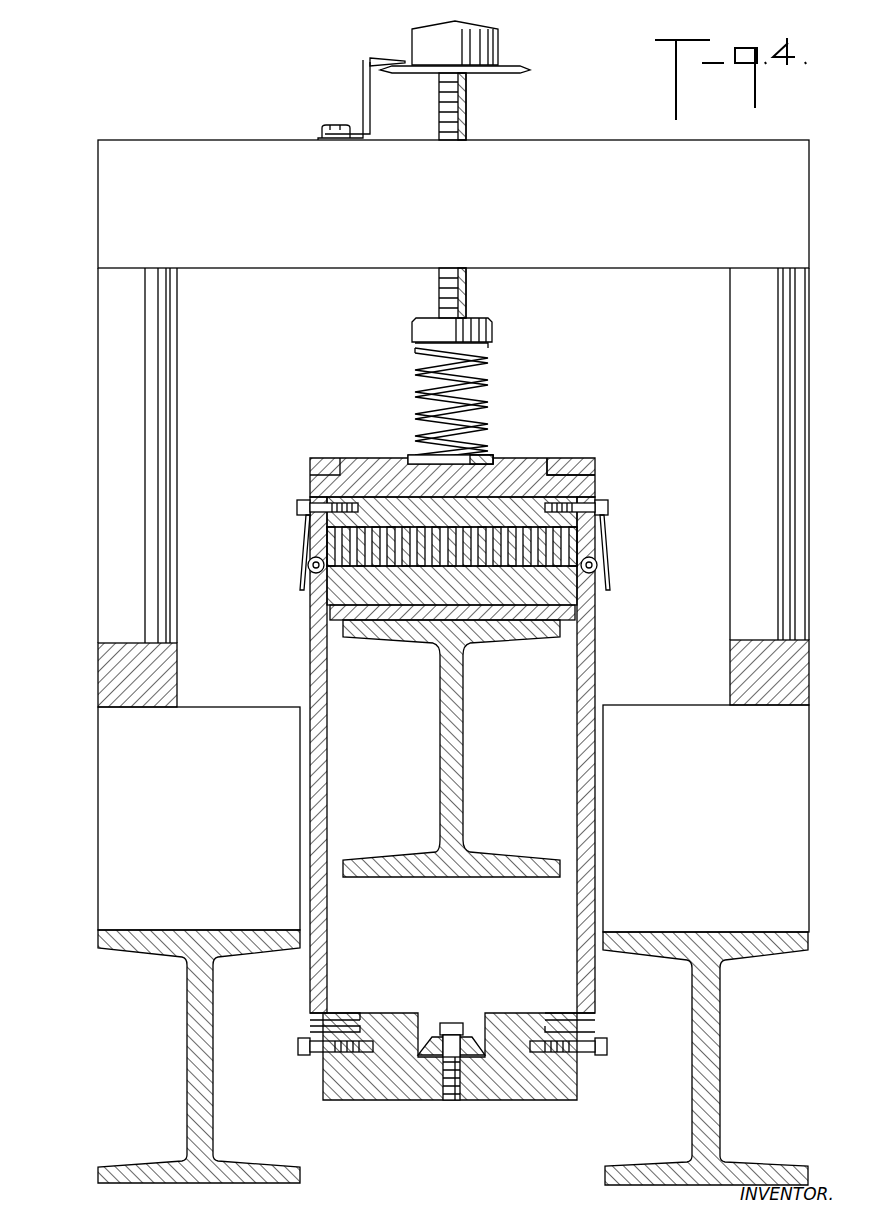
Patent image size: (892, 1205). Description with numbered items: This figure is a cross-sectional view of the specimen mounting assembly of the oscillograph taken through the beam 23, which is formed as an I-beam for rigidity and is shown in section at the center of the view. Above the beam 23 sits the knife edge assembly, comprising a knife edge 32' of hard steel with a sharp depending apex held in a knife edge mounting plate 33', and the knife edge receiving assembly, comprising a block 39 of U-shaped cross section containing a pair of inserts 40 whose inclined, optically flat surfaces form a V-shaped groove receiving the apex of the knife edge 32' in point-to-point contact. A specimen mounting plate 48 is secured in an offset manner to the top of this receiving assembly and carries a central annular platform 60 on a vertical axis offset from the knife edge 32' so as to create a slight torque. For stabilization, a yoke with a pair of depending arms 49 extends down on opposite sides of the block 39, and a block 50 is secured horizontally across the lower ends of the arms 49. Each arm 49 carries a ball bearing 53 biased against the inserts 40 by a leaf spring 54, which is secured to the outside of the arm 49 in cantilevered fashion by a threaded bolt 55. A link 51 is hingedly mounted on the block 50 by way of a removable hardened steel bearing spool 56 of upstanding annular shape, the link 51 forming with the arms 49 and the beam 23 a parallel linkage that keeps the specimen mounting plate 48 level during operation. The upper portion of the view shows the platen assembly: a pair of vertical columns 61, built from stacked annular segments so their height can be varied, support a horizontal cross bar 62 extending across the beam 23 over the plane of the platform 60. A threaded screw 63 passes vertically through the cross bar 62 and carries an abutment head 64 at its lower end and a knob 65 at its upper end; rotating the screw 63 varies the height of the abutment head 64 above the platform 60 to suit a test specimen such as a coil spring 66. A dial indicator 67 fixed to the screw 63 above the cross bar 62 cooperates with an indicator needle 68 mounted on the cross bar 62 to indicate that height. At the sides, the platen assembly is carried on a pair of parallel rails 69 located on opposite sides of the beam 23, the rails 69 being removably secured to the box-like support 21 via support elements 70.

The horizontal cross bar 62 is at (602, 152).
The vertical columns 61 is at (177, 323).
The threaded screw 63 is at (467, 108).
The knob 65 is at (498, 42).
The dial indicator 67 is at (530, 69).
The indicator needle 68 is at (363, 60).
The abutment head 64 is at (492, 327).
The coil spring 66 is at (488, 383).
The platform 60 is at (497, 458).
The specimen mounting plate 48 is at (532, 468).
The block 39 is at (568, 488).
The depending arms 49 is at (596, 634).
The inserts 40 is at (458, 540).
The knife edge 32' is at (452, 635).
The knife edge mounting plate 33' is at (452, 649).
The beam 23 is at (463, 773).
The threaded bolt 55 is at (299, 502).
The ball bearing 53 is at (308, 566).
The leaf spring 54 is at (301, 584).
The rails 69 is at (100, 678).
The support elements 70 is at (115, 823).
The support 21 is at (188, 1063).
The block 50 is at (358, 1100).
The bearing spool 56 is at (442, 1026).
The link 51 is at (482, 1040).